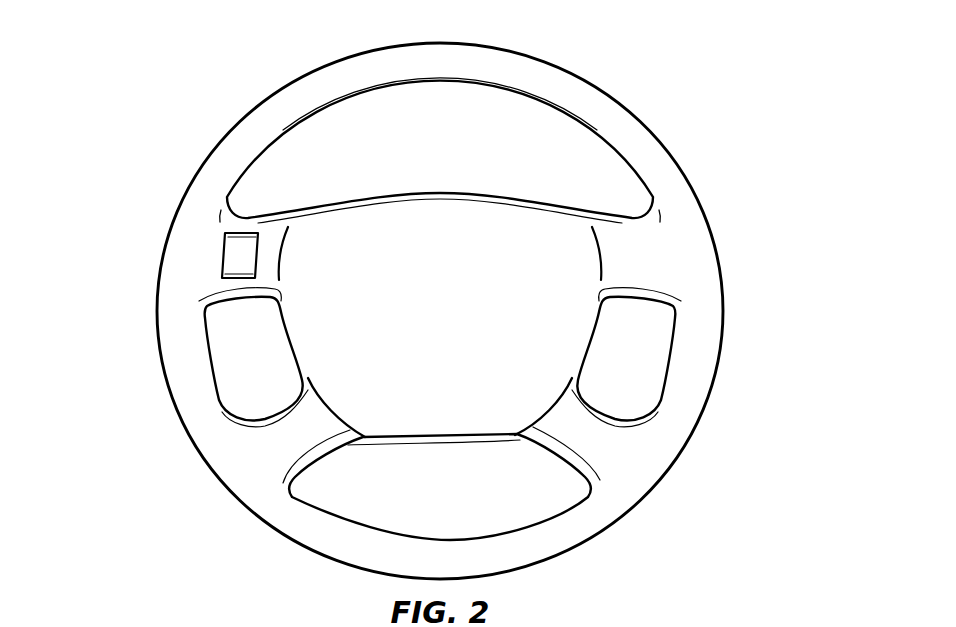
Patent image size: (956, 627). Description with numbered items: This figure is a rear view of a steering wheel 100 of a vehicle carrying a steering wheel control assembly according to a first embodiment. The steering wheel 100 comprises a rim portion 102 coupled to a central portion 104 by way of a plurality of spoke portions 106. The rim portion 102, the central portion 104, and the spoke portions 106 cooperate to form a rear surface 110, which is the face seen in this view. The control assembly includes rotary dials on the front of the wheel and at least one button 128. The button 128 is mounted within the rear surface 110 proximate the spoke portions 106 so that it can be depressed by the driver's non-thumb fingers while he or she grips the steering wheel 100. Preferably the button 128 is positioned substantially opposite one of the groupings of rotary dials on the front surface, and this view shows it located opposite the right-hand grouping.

The steering wheel 100 is at (733, 82).
The rim portion 102 is at (703, 204).
The central portion 104 is at (494, 190).
The spoke portions 106 is at (247, 216).
The rear surface 110 is at (420, 314).
The button 128 is at (218, 256).